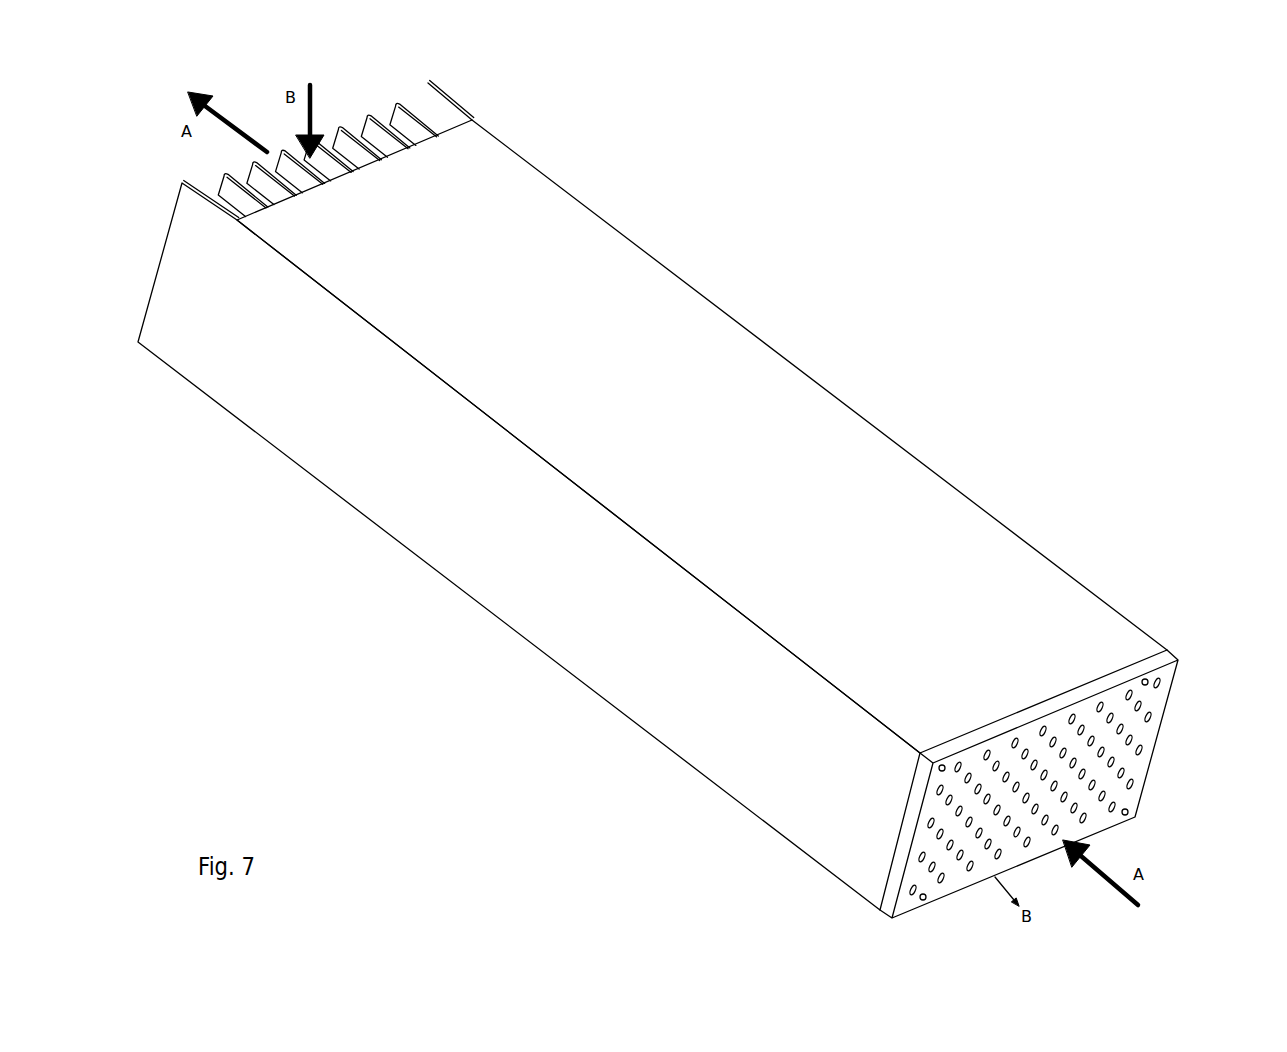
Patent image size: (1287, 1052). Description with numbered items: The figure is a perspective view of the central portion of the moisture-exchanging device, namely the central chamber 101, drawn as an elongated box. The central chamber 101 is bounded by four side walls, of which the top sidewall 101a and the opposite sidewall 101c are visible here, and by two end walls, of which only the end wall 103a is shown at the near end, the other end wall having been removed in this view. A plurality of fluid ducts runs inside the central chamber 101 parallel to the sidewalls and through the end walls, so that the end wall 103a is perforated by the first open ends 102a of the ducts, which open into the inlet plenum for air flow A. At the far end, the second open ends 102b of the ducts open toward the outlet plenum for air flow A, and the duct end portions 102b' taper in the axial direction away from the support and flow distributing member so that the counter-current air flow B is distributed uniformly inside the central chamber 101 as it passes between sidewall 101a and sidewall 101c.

The central chamber 101 is at (703, 485).
The sidewall 101a is at (677, 447).
The sidewall 101c is at (600, 592).
The first open ends 102a is at (1148, 748).
The second open ends 102b is at (314, 138).
The end portions of the ducts 102b' is at (436, 99).
The end wall 103a is at (1177, 657).